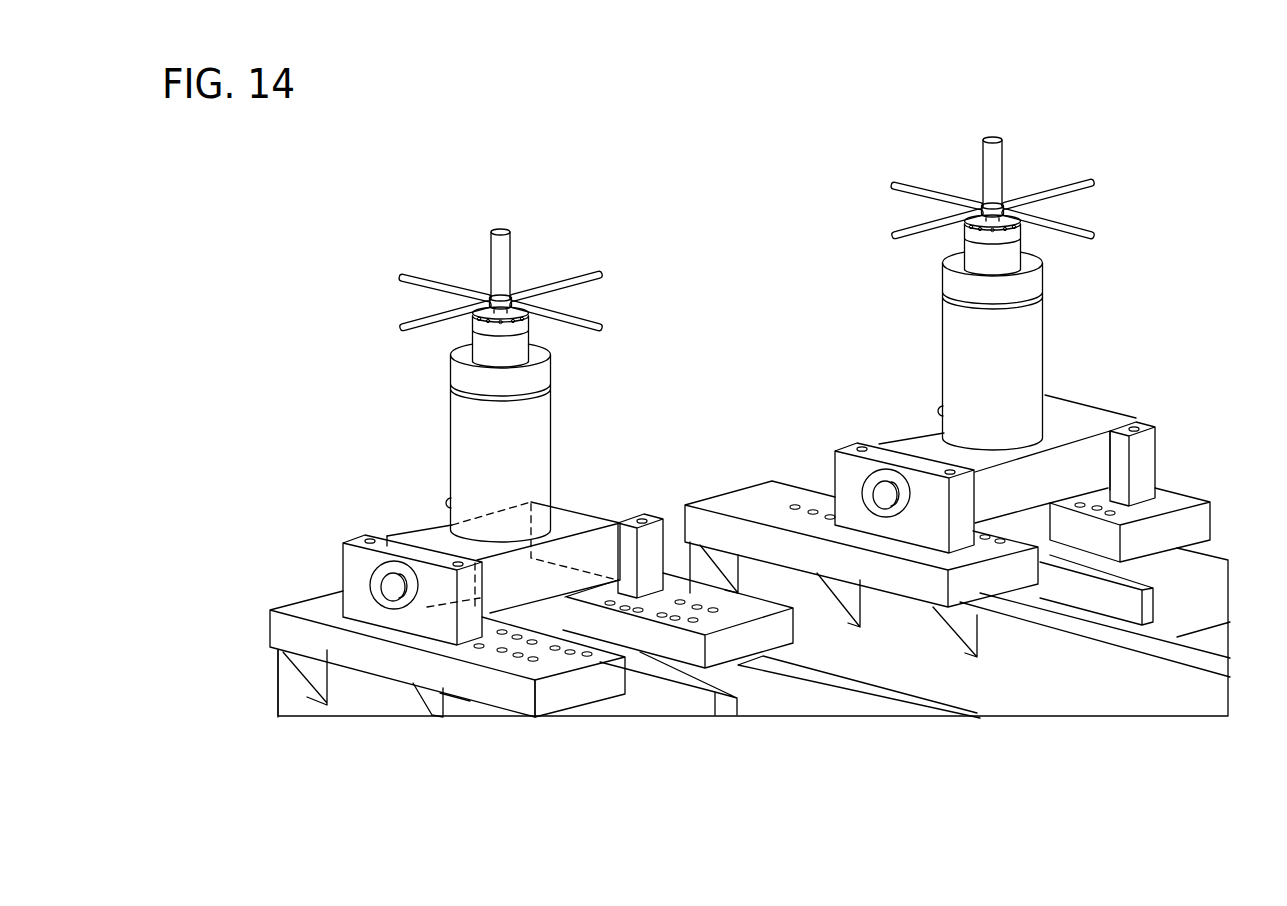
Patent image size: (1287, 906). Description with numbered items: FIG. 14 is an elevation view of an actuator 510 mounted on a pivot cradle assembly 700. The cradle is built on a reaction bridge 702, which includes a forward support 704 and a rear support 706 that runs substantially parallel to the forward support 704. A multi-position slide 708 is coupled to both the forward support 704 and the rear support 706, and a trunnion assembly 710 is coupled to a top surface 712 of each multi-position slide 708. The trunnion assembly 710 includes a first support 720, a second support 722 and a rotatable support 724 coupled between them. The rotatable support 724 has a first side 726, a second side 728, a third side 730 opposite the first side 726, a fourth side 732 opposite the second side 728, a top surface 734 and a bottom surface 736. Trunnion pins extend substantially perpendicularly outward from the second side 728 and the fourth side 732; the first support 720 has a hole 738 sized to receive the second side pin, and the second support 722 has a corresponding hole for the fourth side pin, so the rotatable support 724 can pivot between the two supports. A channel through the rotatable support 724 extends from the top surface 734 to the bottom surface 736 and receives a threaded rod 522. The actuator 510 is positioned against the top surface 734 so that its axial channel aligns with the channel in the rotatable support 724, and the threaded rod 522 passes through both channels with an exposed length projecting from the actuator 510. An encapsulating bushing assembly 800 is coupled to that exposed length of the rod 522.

The actuator 510 is at (457, 410).
The threaded rod 522 is at (505, 260).
The pivot cradle assembly 700 is at (697, 479).
The reaction bridge 702 is at (669, 734).
The forward support 704 is at (582, 716).
The rear support 706 is at (870, 712).
The multi-position slide 708 is at (300, 608).
The trunnion assembly 710 is at (697, 560).
The top surface 712 is at (480, 655).
The first support 720 is at (367, 613).
The second support 722 is at (592, 527).
The rotatable support 724 is at (415, 553).
The first side 726 is at (583, 563).
The second side 728 is at (402, 530).
The third side 730 is at (445, 500).
The fourth side 732 is at (568, 514).
The top surface 734 is at (602, 522).
The bottom surface 736 is at (543, 600).
The hole 738 is at (383, 607).
The encapsulating bushing assembly 800 is at (600, 246).